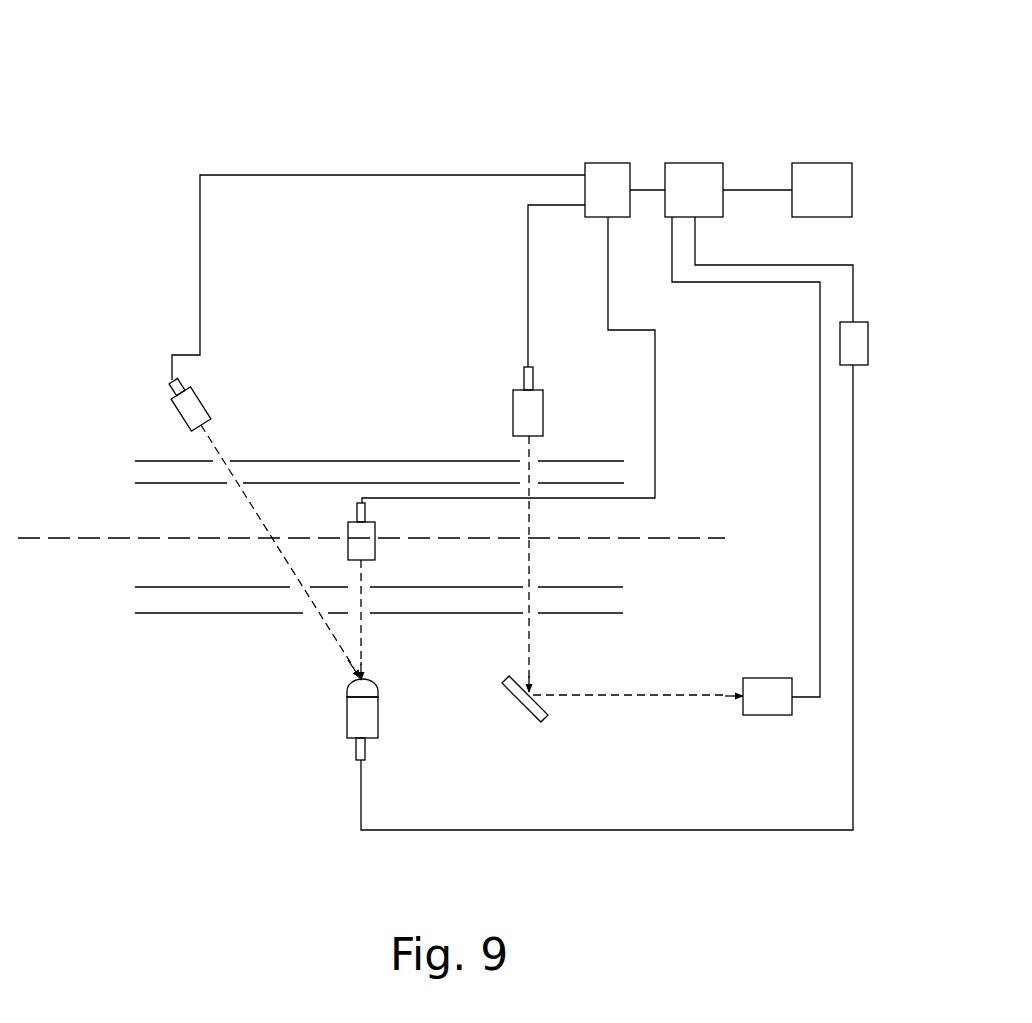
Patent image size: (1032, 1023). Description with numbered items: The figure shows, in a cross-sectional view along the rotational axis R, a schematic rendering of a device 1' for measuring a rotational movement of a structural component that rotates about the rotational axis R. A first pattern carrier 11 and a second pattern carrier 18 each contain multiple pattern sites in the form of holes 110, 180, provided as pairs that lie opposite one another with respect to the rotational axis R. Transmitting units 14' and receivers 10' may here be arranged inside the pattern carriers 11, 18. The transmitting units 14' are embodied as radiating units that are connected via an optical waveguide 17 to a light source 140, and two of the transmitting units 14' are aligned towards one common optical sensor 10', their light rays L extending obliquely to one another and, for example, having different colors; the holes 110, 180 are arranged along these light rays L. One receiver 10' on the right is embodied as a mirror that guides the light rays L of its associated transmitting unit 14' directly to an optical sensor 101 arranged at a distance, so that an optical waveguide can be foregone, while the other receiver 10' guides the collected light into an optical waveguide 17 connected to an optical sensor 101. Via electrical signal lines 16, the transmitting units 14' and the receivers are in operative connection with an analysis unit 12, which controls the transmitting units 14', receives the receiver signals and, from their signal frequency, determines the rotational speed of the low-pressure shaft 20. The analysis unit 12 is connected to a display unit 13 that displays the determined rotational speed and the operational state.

The device 1' is at (87, 37).
The optical waveguide 17 is at (400, 174).
The light source 140 is at (605, 163).
The analysis unit 12 is at (690, 163).
The display unit 13 is at (820, 163).
The electrical signal line 16 is at (853, 265).
The first pattern carrier 11 is at (613, 483).
The transmitting unit 14' is at (316, 453).
The second pattern carrier 18 is at (372, 460).
The low-pressure shaft 20 is at (598, 460).
The hole 180 is at (213, 461).
The hole 110 is at (227, 483).
The rotational axis R is at (703, 537).
The light ray L is at (243, 495).
The receiver 10' is at (447, 731).
The optical sensor 101 is at (868, 345).